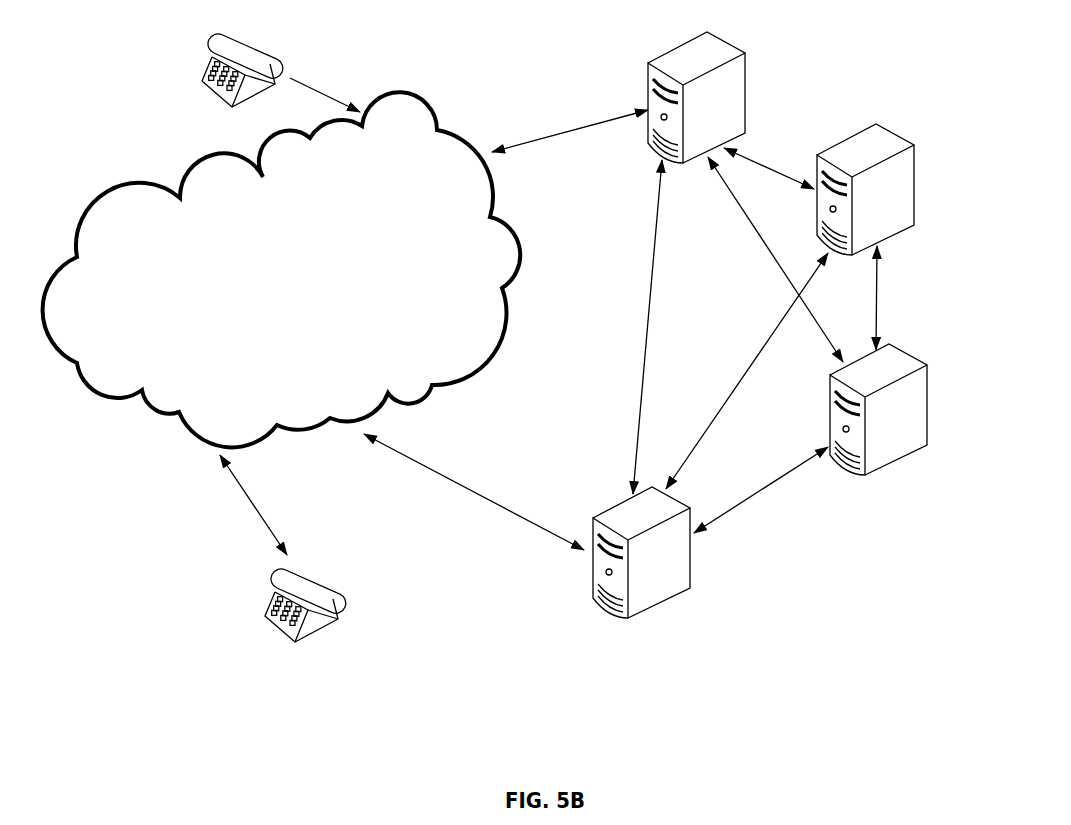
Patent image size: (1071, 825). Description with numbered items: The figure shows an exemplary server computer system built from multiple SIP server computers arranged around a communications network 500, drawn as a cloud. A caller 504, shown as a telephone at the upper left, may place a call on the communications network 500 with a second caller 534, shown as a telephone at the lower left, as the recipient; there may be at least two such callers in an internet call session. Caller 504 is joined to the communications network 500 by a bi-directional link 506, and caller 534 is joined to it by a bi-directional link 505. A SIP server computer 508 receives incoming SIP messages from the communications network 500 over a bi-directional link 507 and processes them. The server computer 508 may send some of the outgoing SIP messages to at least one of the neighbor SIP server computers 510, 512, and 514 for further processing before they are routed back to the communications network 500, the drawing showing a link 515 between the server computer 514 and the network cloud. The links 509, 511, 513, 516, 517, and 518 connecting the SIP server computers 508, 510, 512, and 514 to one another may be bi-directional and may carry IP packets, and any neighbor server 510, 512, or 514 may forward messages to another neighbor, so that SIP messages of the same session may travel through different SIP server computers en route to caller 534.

The communications network 500 is at (470, 377).
The caller 504 is at (200, 57).
The caller 534 is at (320, 641).
The link 505 is at (265, 505).
The link 506 is at (325, 90).
The link 507 is at (570, 131).
The SIP server computer 508 is at (660, 55).
The link 509 is at (769, 165).
The neighbor SIP server computer 510 is at (906, 226).
The link 511 is at (897, 298).
The neighbor SIP server computer 512 is at (893, 465).
The link 513 is at (761, 490).
The neighbor SIP server computer 514 is at (686, 587).
The link 515 is at (474, 492).
The link 516 is at (637, 327).
The link 517 is at (775, 259).
The link 518 is at (747, 371).